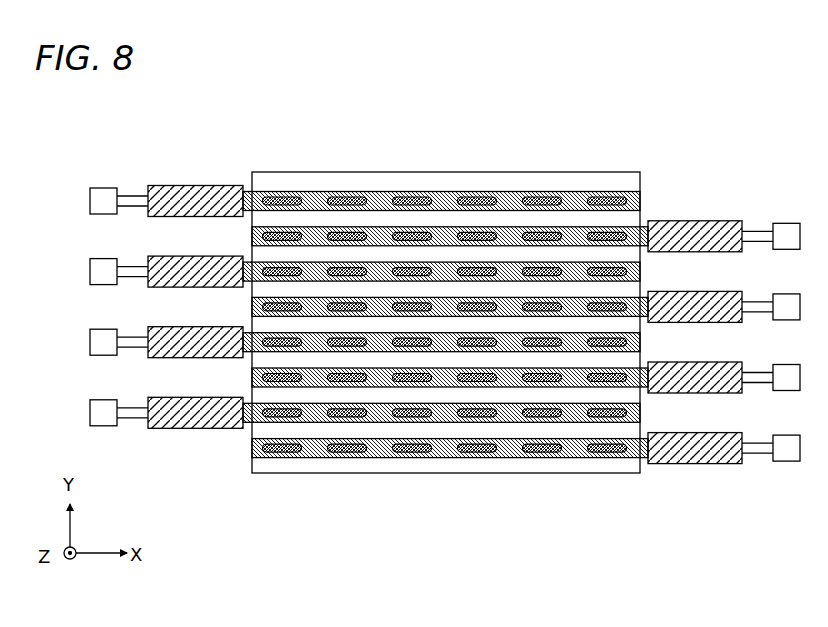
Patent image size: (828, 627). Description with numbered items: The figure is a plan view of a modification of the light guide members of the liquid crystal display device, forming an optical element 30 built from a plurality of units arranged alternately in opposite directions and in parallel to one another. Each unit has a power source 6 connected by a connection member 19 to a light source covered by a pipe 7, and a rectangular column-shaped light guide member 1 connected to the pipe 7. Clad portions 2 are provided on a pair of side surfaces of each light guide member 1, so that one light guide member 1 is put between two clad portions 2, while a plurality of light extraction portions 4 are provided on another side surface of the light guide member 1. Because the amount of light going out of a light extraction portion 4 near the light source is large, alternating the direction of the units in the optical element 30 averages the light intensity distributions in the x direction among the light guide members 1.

The light guide member 1 is at (450, 196).
The clad portion 2 is at (475, 186).
The light extraction portion 4 is at (405, 196).
The power source 6 is at (100, 198).
The pipe 7 is at (213, 190).
The connection member 19 is at (142, 201).
The optical element 30 is at (655, 503).